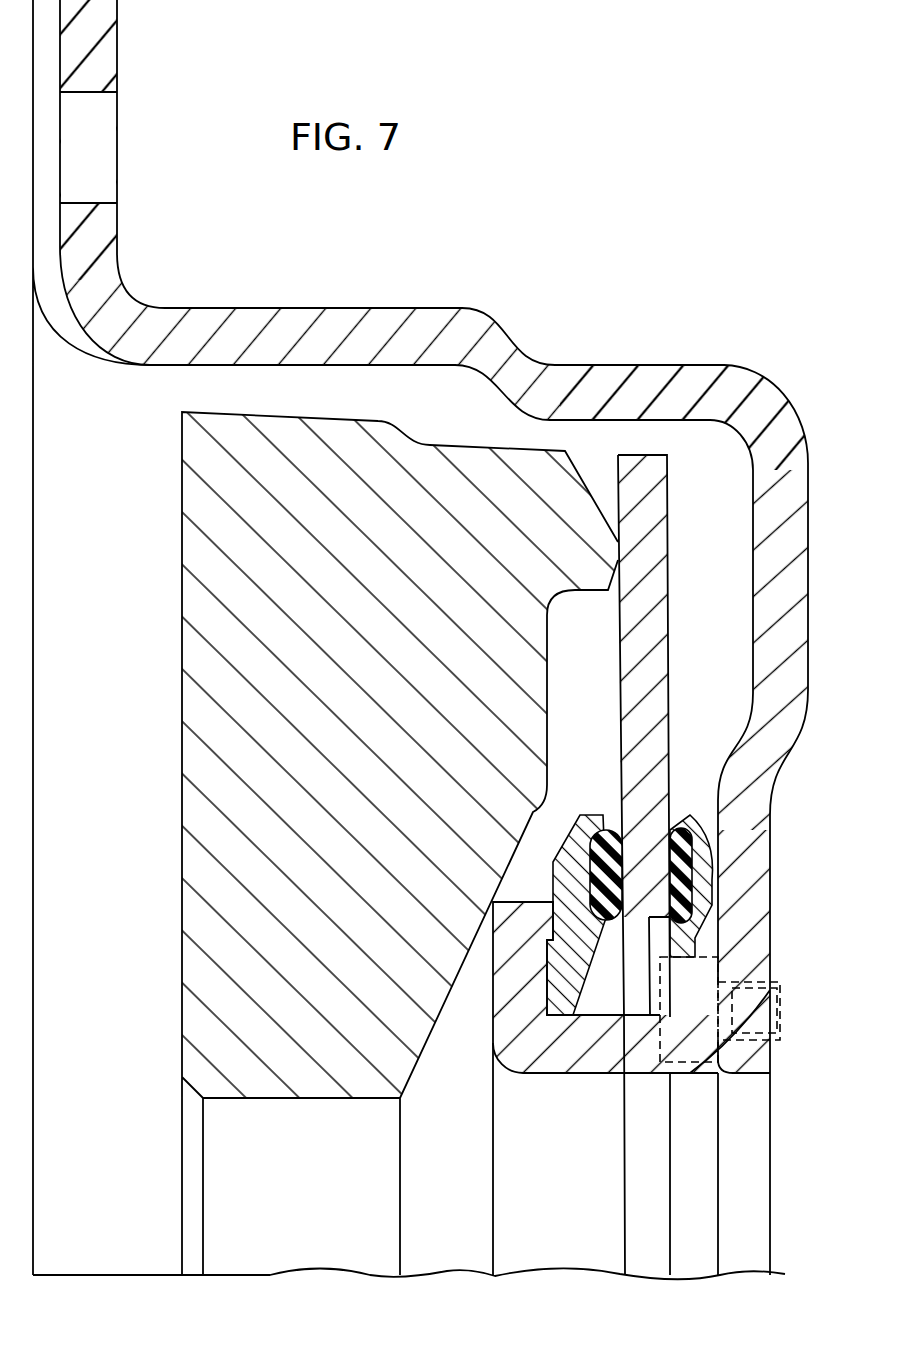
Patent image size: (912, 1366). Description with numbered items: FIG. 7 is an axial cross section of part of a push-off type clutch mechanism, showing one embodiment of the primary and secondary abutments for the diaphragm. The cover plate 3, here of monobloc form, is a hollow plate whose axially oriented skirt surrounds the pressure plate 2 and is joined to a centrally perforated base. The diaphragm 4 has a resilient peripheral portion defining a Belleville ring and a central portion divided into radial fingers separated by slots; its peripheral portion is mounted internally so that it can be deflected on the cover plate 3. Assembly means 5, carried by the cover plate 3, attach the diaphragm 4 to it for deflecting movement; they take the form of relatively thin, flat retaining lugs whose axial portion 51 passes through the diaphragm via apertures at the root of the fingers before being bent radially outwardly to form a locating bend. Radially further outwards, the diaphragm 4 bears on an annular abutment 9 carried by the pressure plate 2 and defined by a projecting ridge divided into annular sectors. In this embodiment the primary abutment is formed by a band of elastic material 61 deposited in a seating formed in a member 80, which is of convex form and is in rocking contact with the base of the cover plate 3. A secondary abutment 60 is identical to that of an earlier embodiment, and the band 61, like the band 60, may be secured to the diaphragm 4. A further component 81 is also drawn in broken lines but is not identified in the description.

The pressure plate 2 is at (267, 1078).
The cover plate 3 is at (683, 377).
The diaphragm 4 is at (674, 489).
The assembly means 5 is at (506, 1074).
The axial portion 51 is at (527, 1072).
The annular abutment 9 is at (618, 550).
The secondary abutment 60 is at (620, 920).
The band of elastic material 61 is at (698, 905).
The member 80 is at (698, 884).
The garter spring 81 is at (690, 975).